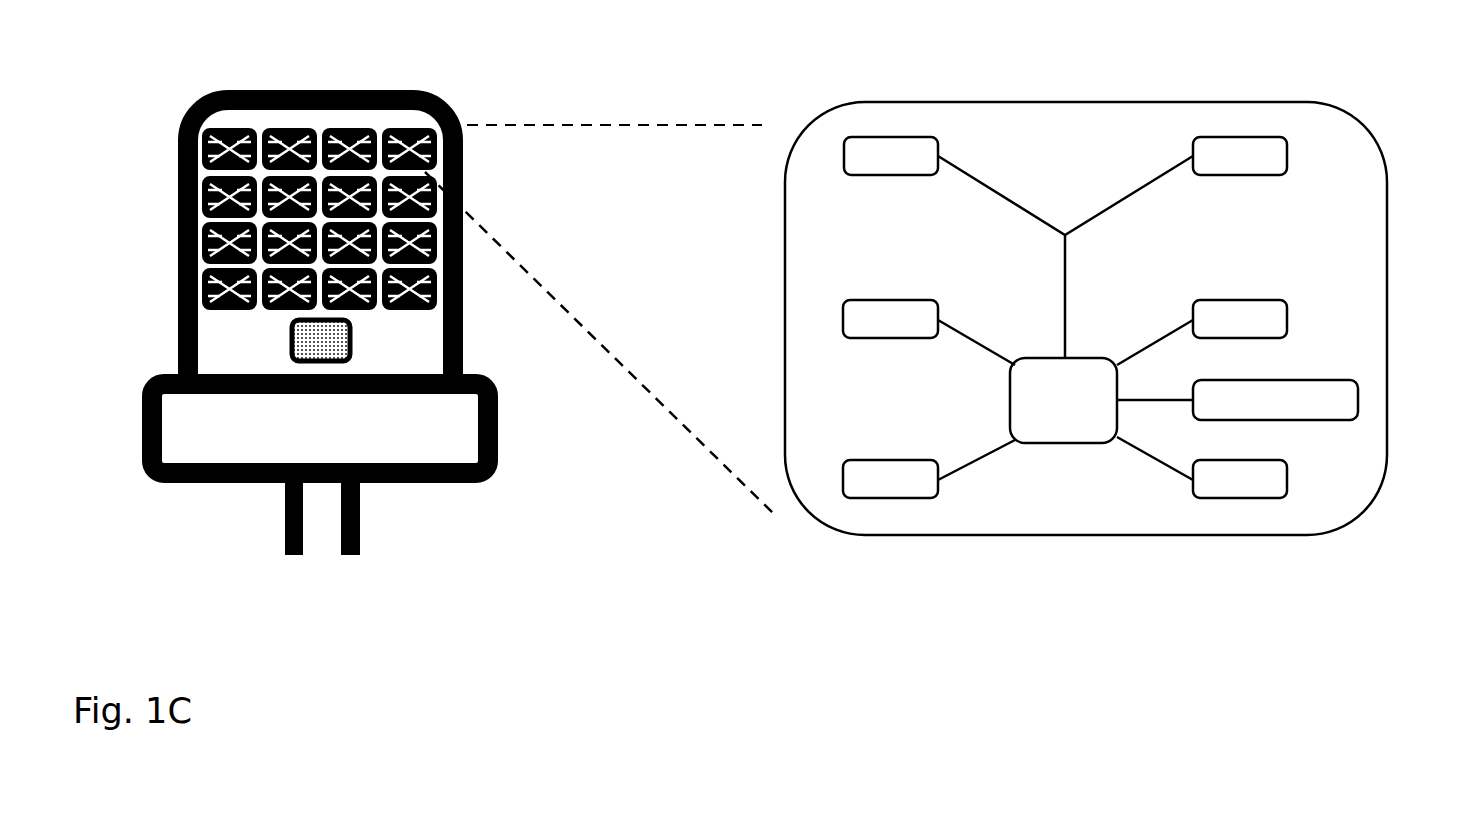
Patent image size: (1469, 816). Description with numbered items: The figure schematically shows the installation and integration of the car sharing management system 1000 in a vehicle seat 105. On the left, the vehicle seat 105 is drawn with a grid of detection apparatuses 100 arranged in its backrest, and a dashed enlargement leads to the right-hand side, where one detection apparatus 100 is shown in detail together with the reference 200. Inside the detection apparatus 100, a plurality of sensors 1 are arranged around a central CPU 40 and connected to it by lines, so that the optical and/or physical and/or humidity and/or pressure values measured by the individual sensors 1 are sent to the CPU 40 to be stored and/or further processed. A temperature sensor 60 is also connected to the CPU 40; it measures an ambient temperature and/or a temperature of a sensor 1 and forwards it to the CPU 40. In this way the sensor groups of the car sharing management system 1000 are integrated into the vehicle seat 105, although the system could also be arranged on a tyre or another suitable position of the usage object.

The sensor 1 is at (878, 163).
The CPU 40 is at (1070, 428).
The temperature sensor 60 is at (1261, 395).
The detection apparatus 100 is at (292, 130).
The vehicle seat 105 is at (507, 492).
The arrangement 200 is at (1205, 54).
The car sharing management system 1000 is at (1127, 54).